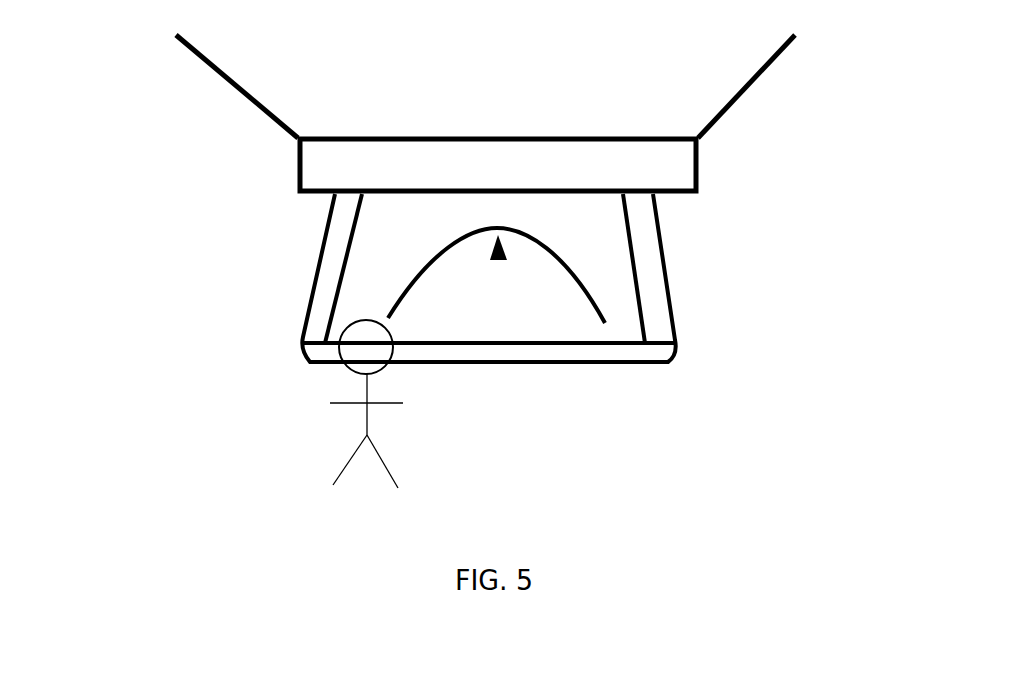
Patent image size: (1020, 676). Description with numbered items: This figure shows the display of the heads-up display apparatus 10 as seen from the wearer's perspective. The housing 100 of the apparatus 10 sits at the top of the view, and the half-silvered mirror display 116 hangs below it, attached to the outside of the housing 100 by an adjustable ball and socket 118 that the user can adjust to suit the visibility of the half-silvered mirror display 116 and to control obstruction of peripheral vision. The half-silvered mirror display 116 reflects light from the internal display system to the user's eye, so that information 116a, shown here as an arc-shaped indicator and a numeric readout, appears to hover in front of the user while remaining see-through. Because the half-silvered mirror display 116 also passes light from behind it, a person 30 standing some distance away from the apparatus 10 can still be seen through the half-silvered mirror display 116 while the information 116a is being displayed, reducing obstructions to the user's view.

The heads-up display apparatus 10 is at (236, 103).
The housing 100 is at (758, 58).
The ball and socket 118 is at (677, 163).
The half-silvered mirror display 116 is at (610, 260).
The information 116a is at (610, 306).
The person 30 is at (342, 423).